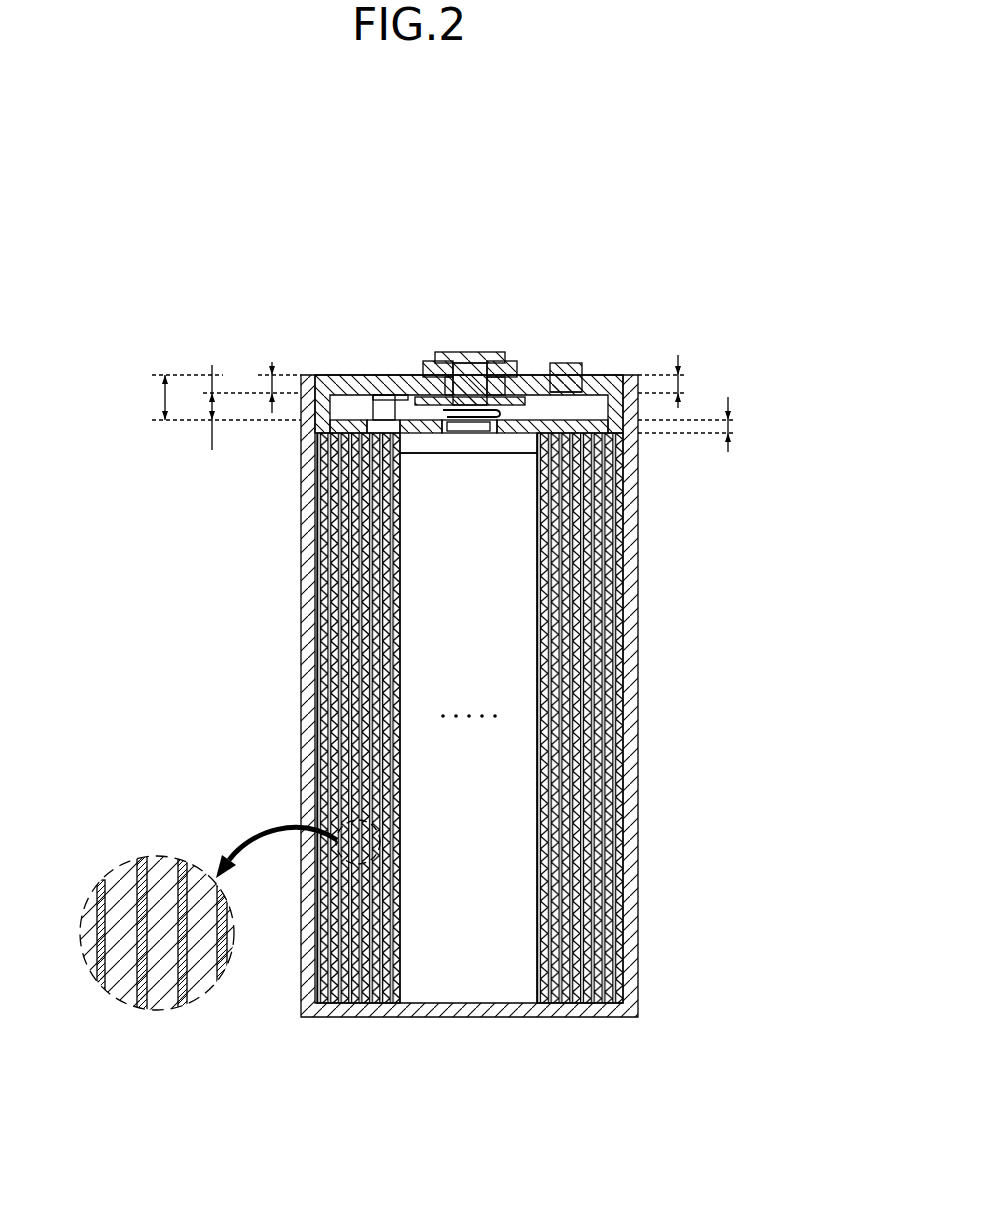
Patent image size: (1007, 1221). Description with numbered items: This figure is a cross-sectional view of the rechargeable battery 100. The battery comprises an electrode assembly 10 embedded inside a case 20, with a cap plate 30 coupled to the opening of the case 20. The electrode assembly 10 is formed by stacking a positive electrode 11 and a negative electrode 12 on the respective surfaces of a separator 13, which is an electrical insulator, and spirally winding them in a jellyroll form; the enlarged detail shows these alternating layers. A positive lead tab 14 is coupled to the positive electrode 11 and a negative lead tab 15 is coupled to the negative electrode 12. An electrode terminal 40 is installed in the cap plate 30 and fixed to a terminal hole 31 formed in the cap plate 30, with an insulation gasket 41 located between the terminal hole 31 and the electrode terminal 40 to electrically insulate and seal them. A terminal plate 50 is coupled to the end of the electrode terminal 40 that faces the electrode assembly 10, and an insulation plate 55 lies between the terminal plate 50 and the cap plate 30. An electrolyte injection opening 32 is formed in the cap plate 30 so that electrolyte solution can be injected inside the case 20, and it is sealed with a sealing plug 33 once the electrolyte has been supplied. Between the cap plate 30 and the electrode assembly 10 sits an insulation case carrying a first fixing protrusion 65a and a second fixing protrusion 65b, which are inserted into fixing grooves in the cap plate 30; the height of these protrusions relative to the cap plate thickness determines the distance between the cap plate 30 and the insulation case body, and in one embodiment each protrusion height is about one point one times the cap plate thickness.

The rechargeable battery 100 is at (634, 264).
The electrode assembly 10 is at (330, 603).
The positive electrode 11 is at (162, 993).
The negative electrode 12 is at (202, 980).
The separator 13 is at (185, 862).
The positive lead tab 14 is at (362, 378).
The negative lead tab 15 is at (512, 433).
The case 20 is at (630, 810).
The cap plate 30 is at (380, 394).
The terminal hole 31 is at (447, 375).
The electrolyte injection opening 32 is at (587, 379).
The sealing plug 33 is at (568, 365).
The electrode terminal 40 is at (467, 365).
The insulation gasket 41 is at (425, 365).
The terminal plate 50 is at (497, 378).
The insulation plate 55 is at (523, 397).
The first fixing protrusion 65a is at (623, 405).
The second fixing protrusion 65b is at (302, 412).